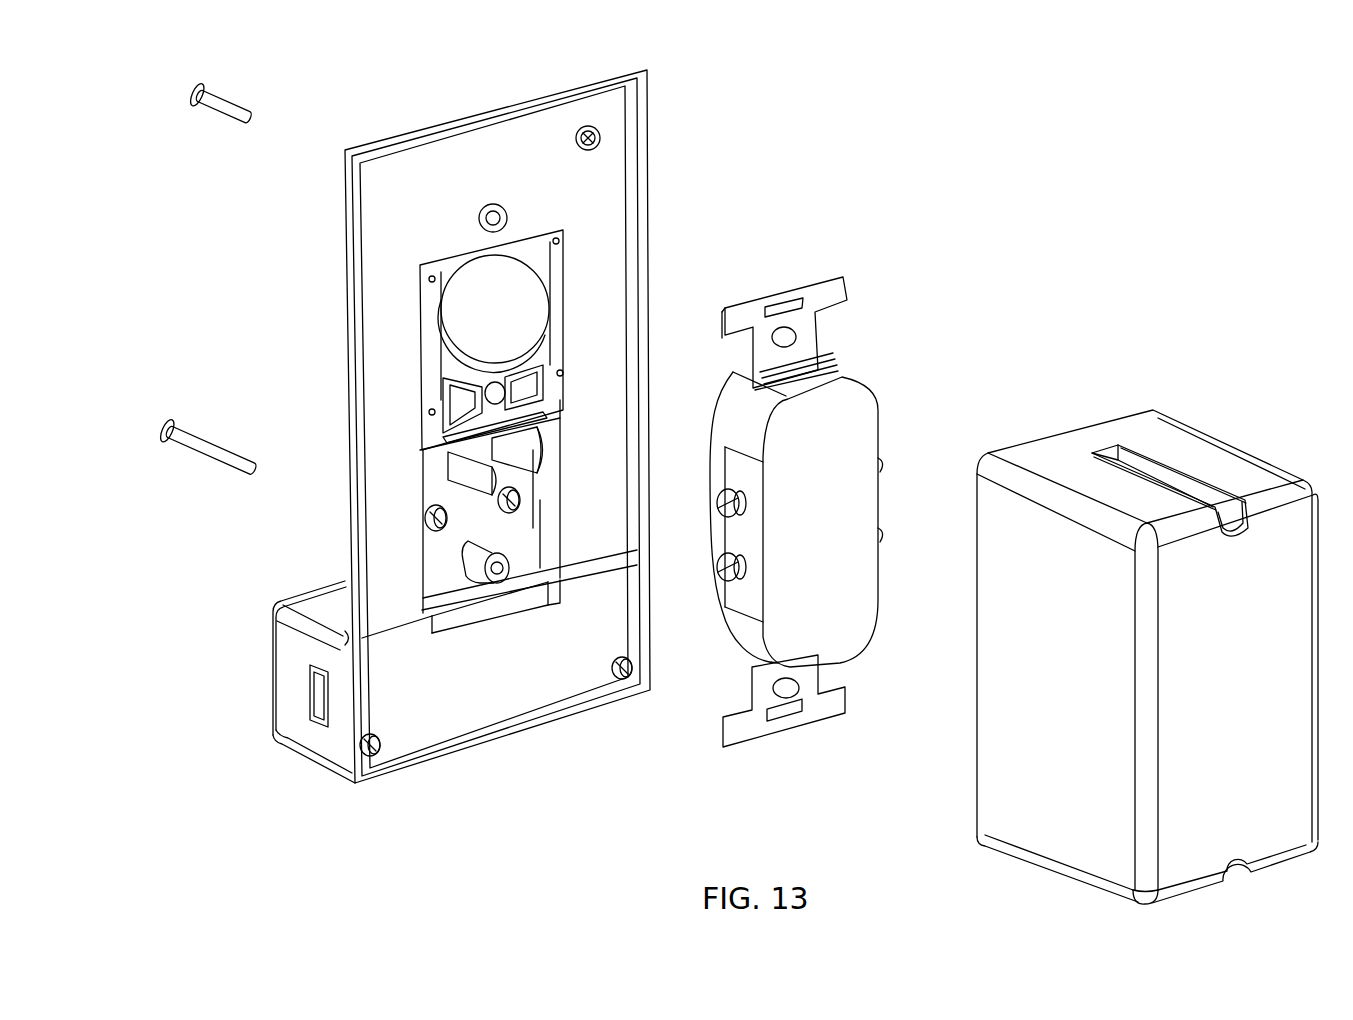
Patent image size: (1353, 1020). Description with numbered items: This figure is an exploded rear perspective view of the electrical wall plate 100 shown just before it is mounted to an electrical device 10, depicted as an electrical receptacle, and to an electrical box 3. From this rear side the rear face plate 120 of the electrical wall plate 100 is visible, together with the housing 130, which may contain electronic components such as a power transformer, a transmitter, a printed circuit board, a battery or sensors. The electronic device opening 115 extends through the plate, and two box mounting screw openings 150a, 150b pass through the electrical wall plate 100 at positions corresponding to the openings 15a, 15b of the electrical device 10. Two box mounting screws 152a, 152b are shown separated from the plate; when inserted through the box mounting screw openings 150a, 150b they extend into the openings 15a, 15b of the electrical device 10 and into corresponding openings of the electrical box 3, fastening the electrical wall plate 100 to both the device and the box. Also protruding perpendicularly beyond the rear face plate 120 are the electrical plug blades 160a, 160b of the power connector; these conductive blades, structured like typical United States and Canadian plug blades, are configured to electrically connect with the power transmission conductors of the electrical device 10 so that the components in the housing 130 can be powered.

The electrical wall plate 100 is at (462, 78).
The rear face plate 120 is at (613, 162).
The housing 130 is at (284, 655).
The electronic device opening 115 is at (451, 304).
The box mounting screw opening 150a is at (480, 220).
The box mounting screw opening 150b is at (480, 565).
The box mounting screw 152a is at (223, 113).
The box mounting screw 152b is at (200, 437).
The electrical plug blade 160a is at (527, 465).
The electrical plug blade 160b is at (473, 473).
The electrical device 10 is at (828, 238).
The opening of electrical device 15a is at (790, 338).
The opening of electrical device 15b is at (785, 690).
The electrical box 3 is at (1107, 370).